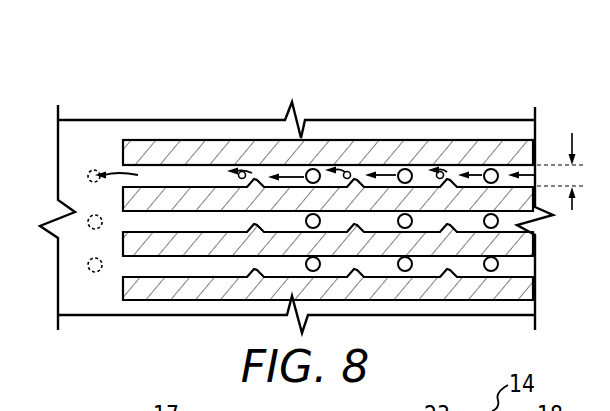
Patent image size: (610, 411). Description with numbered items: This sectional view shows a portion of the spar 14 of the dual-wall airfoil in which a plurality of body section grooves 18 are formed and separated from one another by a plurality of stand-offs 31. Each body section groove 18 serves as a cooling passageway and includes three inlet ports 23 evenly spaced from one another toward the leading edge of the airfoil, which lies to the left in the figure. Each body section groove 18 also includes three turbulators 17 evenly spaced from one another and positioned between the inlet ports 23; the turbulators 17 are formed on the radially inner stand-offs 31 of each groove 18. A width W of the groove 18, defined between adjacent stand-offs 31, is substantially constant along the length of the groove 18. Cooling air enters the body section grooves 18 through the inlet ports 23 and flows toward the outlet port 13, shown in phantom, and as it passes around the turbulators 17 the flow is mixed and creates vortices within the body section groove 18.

The outlet port 13 is at (94, 150).
The spar 14 is at (473, 92).
The turbulator 17 is at (252, 188).
The body section groove 18 is at (535, 175).
The inlet port 23 is at (313, 176).
The stand-off 31 is at (187, 182).
The width W is at (560, 171).